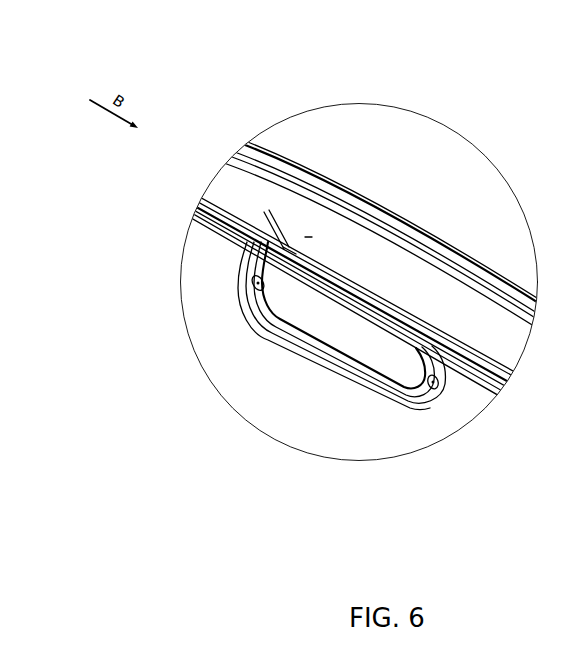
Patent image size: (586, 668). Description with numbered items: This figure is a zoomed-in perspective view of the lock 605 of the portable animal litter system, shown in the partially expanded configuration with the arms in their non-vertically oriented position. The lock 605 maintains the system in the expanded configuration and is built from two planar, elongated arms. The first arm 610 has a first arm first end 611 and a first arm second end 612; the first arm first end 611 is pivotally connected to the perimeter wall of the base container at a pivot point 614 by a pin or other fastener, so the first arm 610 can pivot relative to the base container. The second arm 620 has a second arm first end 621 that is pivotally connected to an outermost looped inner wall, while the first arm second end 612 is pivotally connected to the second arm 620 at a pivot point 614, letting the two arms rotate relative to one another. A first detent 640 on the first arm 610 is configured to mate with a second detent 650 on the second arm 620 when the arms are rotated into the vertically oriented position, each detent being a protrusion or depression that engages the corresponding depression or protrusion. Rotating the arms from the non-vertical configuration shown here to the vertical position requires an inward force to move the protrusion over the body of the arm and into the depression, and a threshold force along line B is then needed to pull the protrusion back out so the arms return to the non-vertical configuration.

The lock 605 is at (337, 340).
The first arm 610 is at (199, 208).
The first arm first end 611 is at (287, 262).
The first arm second end 612 is at (252, 213).
The pivot point 614 is at (282, 237).
The second arm 620 is at (290, 256).
The second arm first end 621 is at (355, 192).
The first detent 640 is at (265, 210).
The second detent 650 is at (305, 237).